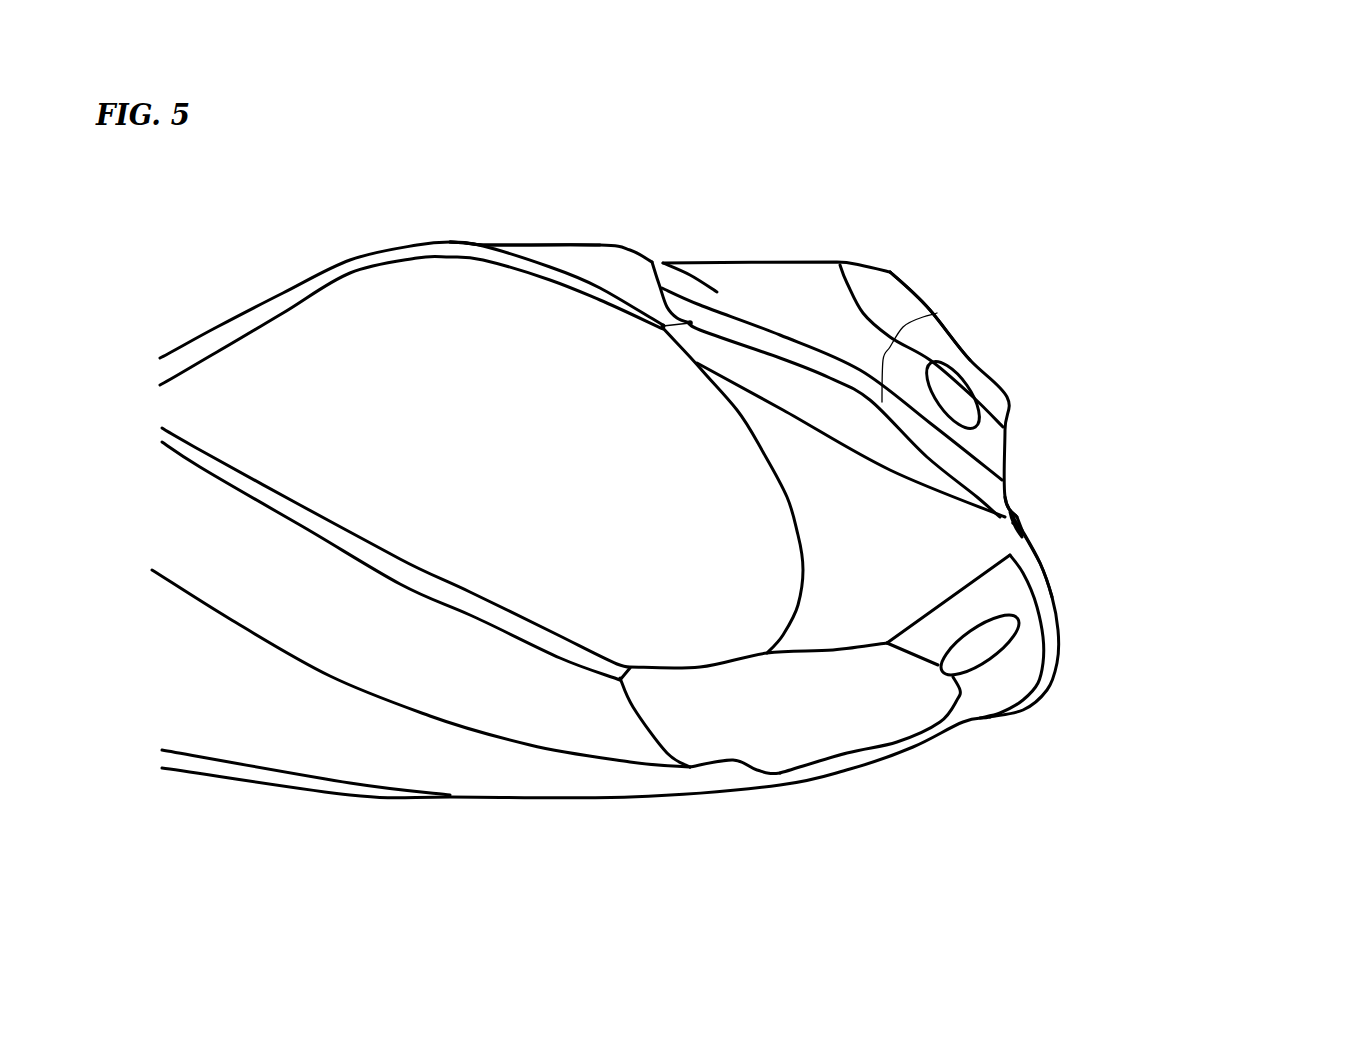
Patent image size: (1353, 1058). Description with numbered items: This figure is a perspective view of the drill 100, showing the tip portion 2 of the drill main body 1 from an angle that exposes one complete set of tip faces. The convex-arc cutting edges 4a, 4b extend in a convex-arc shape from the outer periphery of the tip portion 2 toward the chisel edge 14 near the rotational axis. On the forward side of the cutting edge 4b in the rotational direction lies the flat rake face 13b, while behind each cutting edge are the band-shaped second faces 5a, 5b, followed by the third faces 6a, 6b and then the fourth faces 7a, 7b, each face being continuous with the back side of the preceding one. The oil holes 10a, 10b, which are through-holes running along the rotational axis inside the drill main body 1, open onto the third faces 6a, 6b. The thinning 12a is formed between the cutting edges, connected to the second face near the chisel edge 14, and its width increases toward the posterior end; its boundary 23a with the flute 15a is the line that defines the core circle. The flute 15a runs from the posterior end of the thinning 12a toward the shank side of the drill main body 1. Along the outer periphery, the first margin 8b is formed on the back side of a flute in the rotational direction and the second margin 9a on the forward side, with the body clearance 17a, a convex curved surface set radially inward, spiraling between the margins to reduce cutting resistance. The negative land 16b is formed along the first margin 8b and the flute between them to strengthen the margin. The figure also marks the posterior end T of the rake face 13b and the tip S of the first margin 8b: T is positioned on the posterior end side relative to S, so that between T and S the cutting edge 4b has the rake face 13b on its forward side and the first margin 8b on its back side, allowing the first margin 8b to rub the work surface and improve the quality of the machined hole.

The drill 100 is at (1230, 162).
The drill main body 1 is at (492, 215).
The tip portion 2 is at (1093, 209).
The negative land 16b is at (342, 268).
The flute 15a is at (452, 310).
The first margin 8b is at (600, 270).
The second face 5b is at (739, 328).
The third face 6b is at (803, 287).
The fourth face 7b is at (878, 308).
The convex-arc cutting edge 4b is at (937, 313).
The oil hole 10b is at (943, 383).
The rake face 13b is at (910, 468).
The chisel edge 14 is at (1040, 545).
The convex-arc cutting edge 4a is at (1056, 573).
The second face 5a is at (1054, 607).
The oil hole 10a is at (975, 650).
The third face 6a is at (943, 723).
The thinning 12a is at (835, 610).
The fourth face 7a is at (750, 717).
The boundary 23a is at (795, 515).
The second margin 9a is at (527, 685).
The body clearance 17a is at (365, 717).
The posterior end of rake face T is at (667, 308).
The tip of first margin S is at (696, 337).